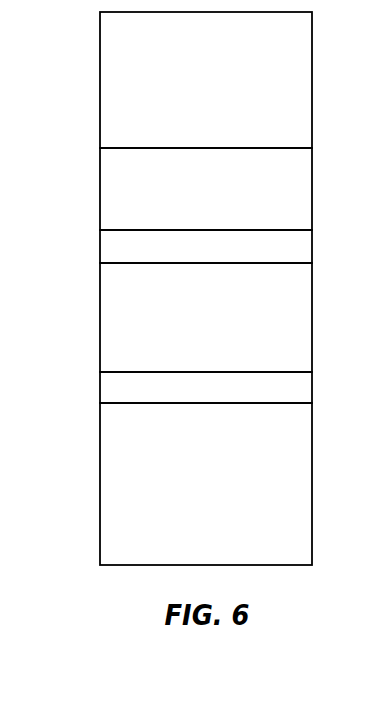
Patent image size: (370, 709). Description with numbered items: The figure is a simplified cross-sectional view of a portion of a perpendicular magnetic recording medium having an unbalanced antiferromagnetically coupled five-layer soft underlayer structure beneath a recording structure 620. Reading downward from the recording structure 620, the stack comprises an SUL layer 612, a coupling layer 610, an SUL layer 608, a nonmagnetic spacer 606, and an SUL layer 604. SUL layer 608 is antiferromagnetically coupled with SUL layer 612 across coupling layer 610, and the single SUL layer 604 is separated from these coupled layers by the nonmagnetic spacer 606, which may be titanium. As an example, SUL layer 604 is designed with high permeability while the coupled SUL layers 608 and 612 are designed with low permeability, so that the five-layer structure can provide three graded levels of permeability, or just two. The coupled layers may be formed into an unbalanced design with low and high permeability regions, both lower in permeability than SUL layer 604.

The recording structure 620 is at (100, 82).
The SUL layer 612 is at (100, 187).
The coupling layer 610 is at (100, 247).
The SUL layer 608 is at (100, 318).
The nonmagnetic spacer 606 is at (100, 387).
The SUL layer 604 is at (100, 488).